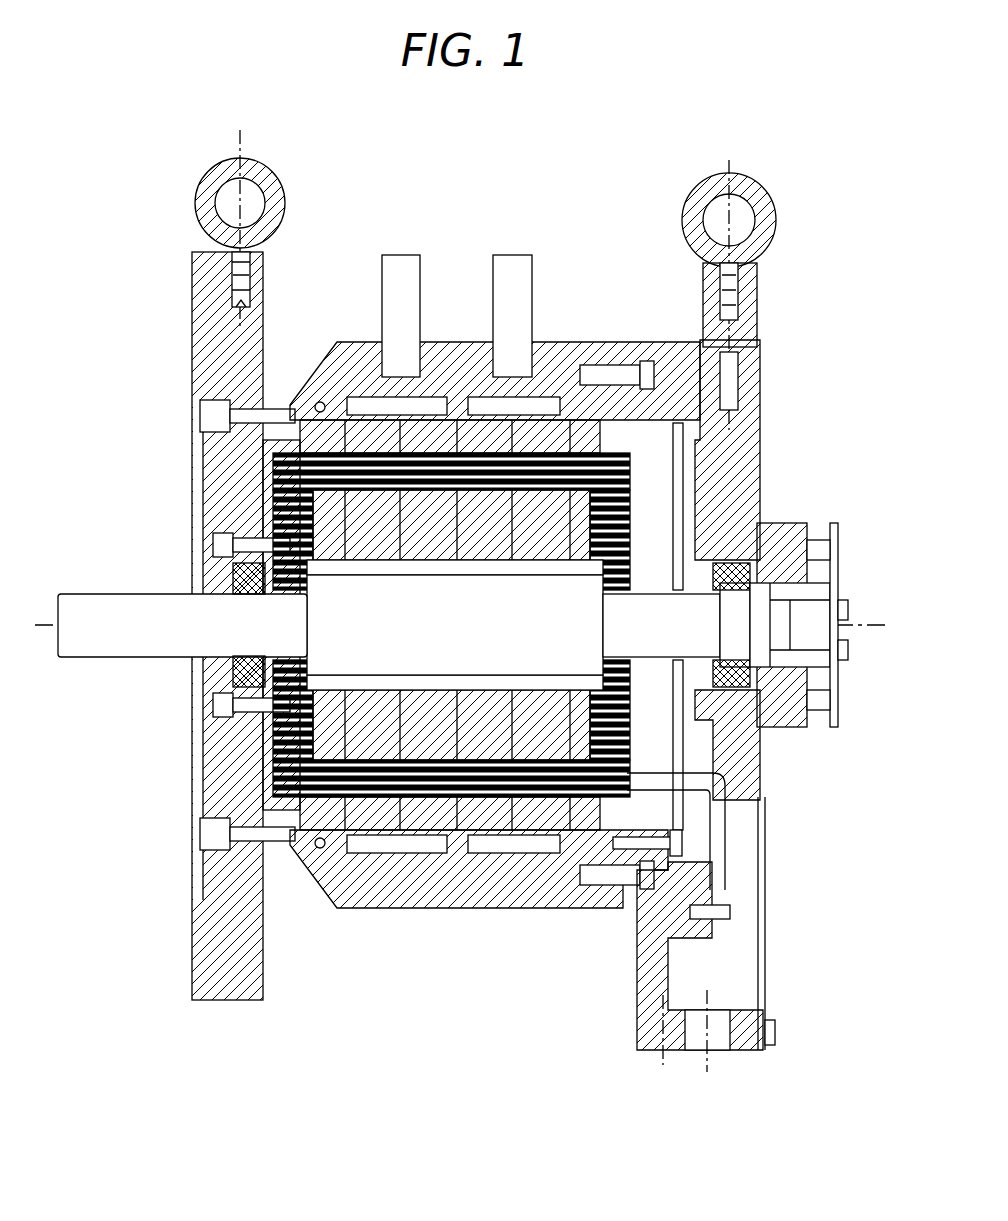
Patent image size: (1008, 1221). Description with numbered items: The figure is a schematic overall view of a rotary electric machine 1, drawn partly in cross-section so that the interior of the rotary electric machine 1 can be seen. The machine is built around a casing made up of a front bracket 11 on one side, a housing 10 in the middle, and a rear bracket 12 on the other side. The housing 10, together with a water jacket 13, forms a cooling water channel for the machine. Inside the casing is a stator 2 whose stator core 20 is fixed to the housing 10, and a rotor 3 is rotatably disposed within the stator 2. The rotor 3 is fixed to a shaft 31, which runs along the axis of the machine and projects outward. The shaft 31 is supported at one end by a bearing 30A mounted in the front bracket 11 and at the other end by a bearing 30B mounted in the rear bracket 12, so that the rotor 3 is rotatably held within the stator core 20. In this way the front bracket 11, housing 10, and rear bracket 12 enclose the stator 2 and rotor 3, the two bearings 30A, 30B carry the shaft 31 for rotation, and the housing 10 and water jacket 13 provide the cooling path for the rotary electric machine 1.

The rotary electric machine 1 is at (193, 283).
The housing 10 is at (330, 415).
The front bracket 11 is at (230, 485).
The rear bracket 12 is at (700, 430).
The water jacket 13 is at (560, 352).
The stator 2 is at (715, 470).
The stator core 20 is at (620, 480).
The rotor 3 is at (270, 745).
The bearing 30A is at (260, 580).
The bearing 30B is at (760, 522).
The shaft 31 is at (180, 648).